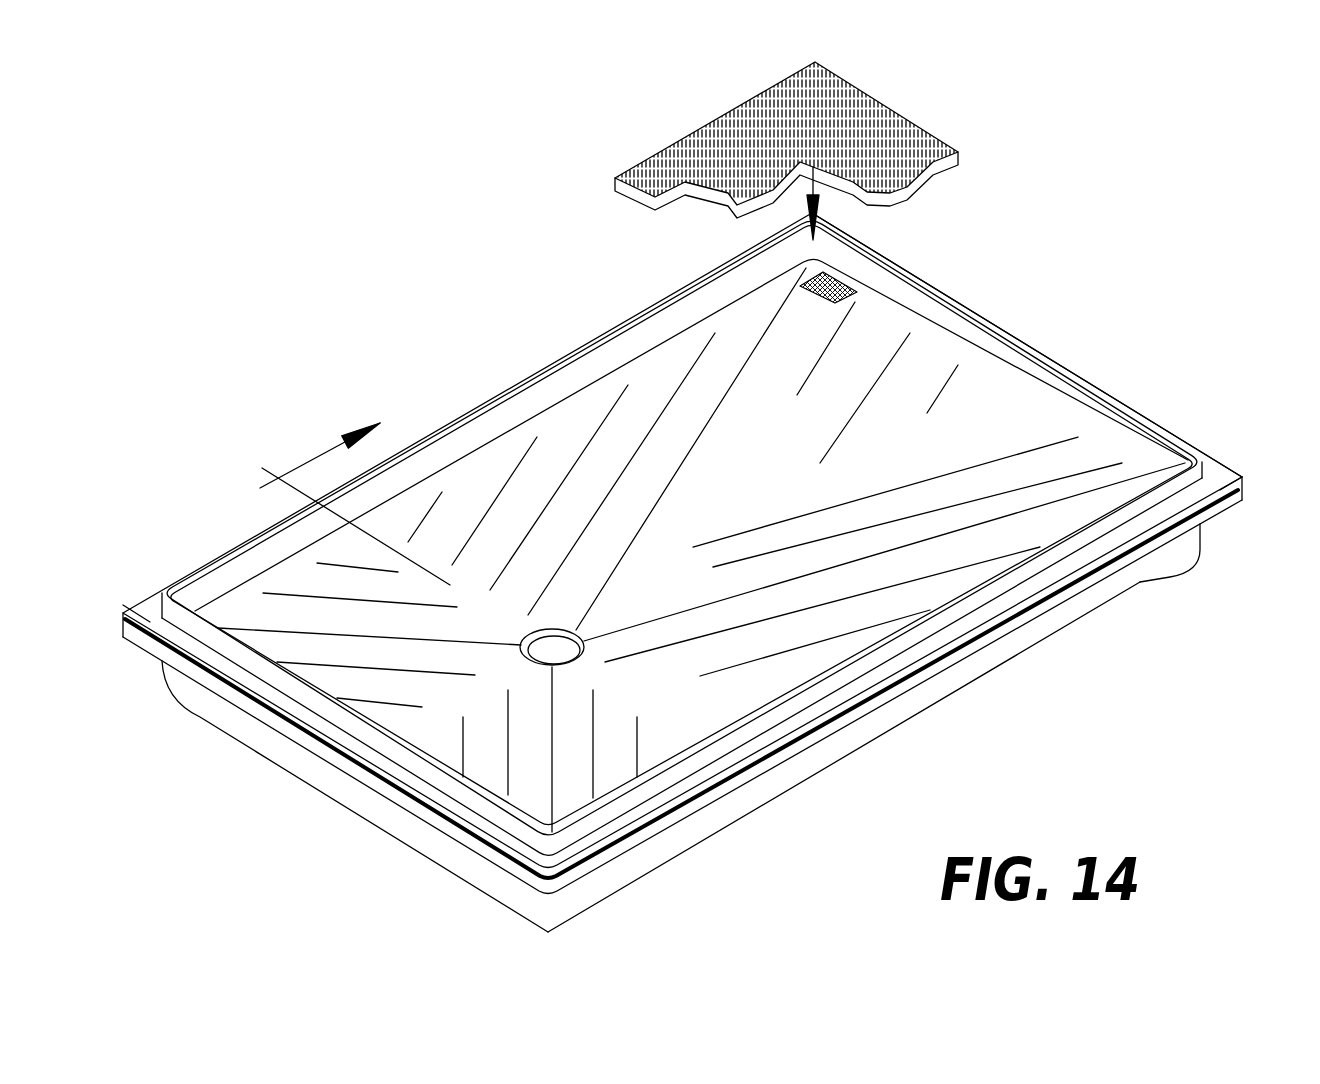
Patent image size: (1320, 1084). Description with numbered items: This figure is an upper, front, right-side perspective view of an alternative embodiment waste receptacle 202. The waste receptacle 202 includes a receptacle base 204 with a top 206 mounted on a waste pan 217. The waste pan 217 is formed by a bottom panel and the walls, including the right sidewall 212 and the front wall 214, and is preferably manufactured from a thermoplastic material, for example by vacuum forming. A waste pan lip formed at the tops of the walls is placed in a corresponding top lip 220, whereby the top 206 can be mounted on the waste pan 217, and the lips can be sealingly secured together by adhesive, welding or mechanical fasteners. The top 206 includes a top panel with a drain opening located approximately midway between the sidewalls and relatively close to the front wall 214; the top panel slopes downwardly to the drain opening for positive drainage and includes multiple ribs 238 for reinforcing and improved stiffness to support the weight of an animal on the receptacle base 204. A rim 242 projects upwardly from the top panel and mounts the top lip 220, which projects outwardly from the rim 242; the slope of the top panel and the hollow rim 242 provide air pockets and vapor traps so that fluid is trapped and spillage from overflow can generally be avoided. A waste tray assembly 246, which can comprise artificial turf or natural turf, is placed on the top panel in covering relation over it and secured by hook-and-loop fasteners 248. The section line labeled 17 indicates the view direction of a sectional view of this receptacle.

The section view direction 17 is at (331, 504).
The waste receptacle 202 is at (360, 270).
The receptacle base 204 is at (627, 318).
The top 206 is at (1235, 468).
The right sidewall 212 is at (930, 693).
The front wall 214 is at (285, 757).
The waste pan 217 is at (1202, 523).
The top lip 220 is at (123, 610).
The ribs 238 is at (713, 567).
The rim 242 is at (558, 362).
The waste tray assembly 246 is at (958, 158).
The hook-and-loop fasteners 248 is at (831, 303).